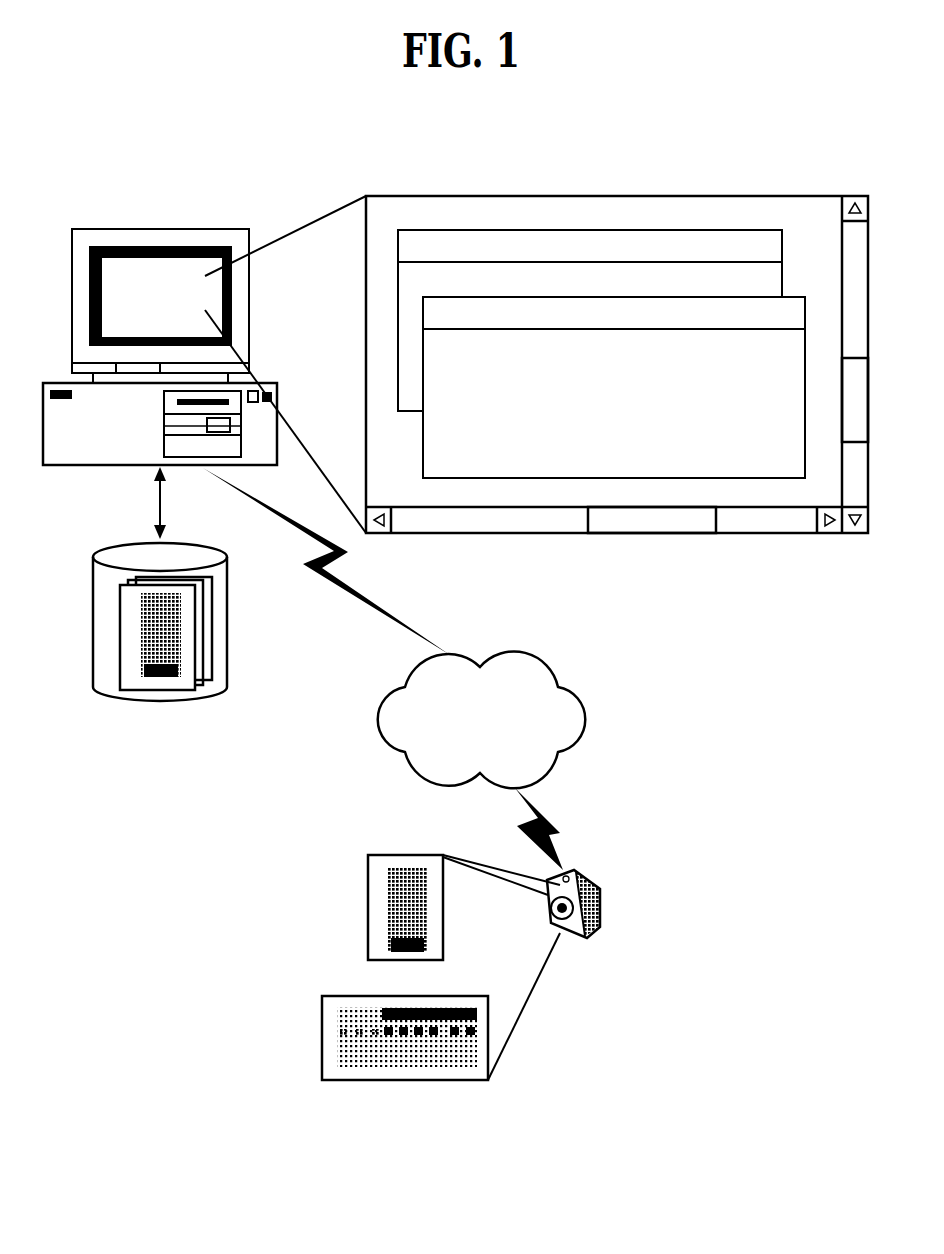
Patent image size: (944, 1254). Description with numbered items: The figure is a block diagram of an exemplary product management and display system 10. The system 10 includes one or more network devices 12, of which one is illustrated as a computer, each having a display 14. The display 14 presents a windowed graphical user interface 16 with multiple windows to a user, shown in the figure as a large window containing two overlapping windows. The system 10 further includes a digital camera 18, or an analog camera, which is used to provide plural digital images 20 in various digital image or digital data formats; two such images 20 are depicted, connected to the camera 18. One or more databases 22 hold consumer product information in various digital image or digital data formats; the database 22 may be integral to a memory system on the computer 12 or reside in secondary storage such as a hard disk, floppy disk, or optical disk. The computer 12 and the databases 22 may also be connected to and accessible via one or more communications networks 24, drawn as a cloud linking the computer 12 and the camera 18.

The product management and display system 10 is at (652, 131).
The network device 12 is at (277, 383).
The display 14 is at (153, 277).
The windowed graphical user interface 16 is at (622, 518).
The digital camera 18 is at (577, 877).
The digital images 20 is at (367, 908).
The database 22 is at (228, 617).
The communications network 24 is at (513, 650).